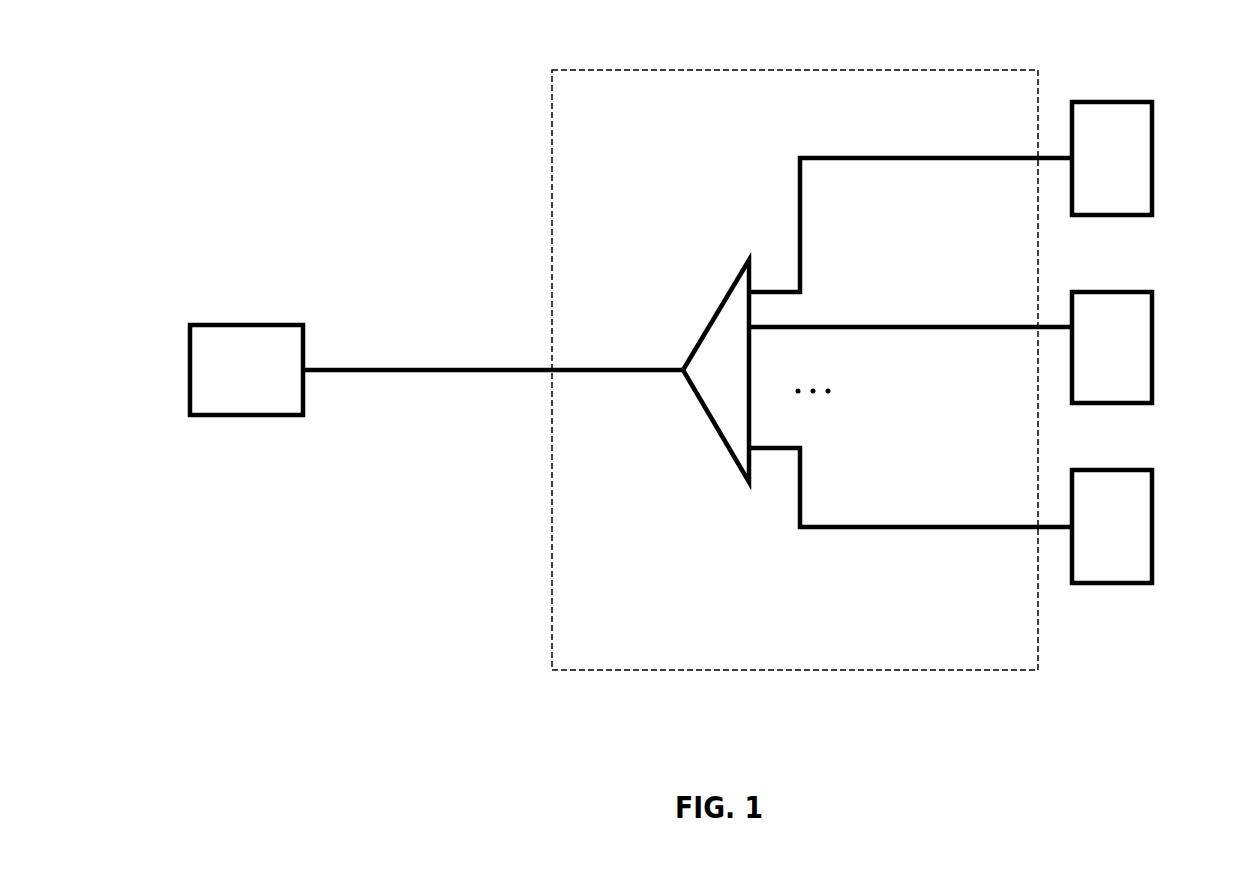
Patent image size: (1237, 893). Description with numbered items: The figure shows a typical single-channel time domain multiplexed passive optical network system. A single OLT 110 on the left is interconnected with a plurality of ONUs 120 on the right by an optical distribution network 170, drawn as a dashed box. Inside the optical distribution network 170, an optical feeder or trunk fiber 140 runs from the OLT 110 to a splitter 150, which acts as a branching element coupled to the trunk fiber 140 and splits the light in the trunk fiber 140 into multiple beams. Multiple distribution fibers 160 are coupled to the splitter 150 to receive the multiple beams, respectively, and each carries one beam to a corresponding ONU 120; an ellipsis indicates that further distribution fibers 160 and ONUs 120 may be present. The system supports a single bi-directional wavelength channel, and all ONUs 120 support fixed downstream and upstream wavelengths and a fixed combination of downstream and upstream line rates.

The OLT 110 is at (235, 325).
The ONUs 120 is at (1105, 102).
The trunk fiber 140 is at (590, 373).
The splitter 150 is at (730, 290).
The distribution fibers 160 is at (892, 160).
The optical distribution network 170 is at (913, 670).